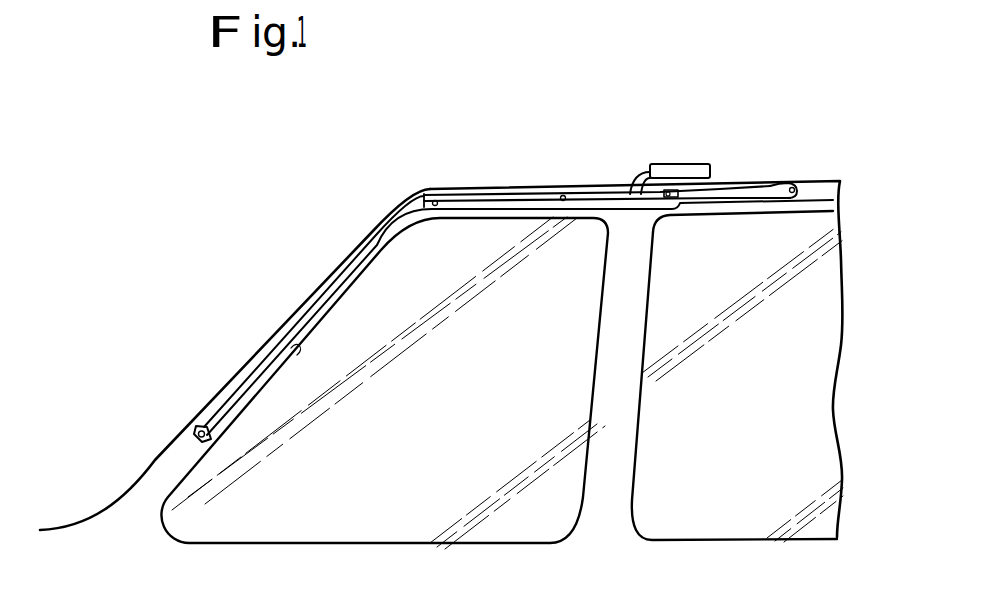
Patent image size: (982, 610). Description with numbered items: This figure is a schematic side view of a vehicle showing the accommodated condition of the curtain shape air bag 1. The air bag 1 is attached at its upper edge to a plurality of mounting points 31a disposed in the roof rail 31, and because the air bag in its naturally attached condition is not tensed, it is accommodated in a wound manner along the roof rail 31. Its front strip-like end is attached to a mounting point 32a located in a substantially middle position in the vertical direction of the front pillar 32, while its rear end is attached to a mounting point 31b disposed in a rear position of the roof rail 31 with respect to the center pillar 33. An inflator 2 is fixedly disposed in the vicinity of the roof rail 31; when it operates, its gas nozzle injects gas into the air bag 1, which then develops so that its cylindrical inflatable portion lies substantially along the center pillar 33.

The curtain shape air bag 1 is at (497, 210).
The inflator 2 is at (697, 163).
The roof rail 31 is at (836, 184).
The mounting points 31a is at (422, 195).
The mounting point 31b is at (794, 183).
The front pillar 32 is at (300, 303).
The mounting point 32a is at (197, 428).
The center pillar 33 is at (625, 388).